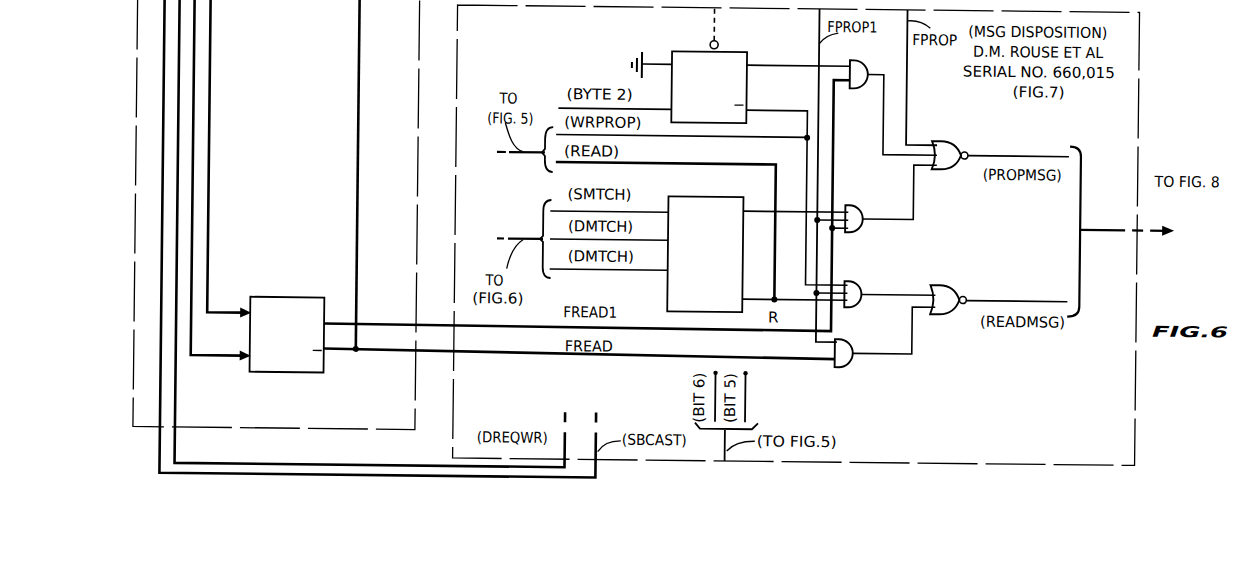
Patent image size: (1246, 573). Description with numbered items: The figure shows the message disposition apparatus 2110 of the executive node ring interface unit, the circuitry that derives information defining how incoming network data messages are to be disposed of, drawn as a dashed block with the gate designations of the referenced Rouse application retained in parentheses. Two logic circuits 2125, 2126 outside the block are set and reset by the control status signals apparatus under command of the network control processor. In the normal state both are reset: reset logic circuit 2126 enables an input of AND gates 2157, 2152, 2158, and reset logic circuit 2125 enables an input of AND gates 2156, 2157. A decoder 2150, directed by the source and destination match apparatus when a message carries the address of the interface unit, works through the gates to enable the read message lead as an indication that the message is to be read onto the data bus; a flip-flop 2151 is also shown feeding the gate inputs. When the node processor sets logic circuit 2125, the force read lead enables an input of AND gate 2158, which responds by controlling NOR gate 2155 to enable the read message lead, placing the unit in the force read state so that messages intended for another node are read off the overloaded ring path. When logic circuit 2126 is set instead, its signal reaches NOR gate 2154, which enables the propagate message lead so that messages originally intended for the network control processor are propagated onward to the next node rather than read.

The message disposition apparatus 2110 is at (1077, 8).
The logic circuit 2125 is at (286, 376).
The logic circuit 2126 is at (266, 0).
The decoder 2150 is at (720, 243).
The flip-flop 2151 is at (731, 51).
The AND gate 2152 is at (873, 276).
The NOR gate 2154 is at (963, 148).
The NOR gate 2155 is at (966, 293).
The AND gate 2156 is at (880, 52).
The AND gate 2157 is at (882, 197).
The AND gate 2158 is at (866, 361).